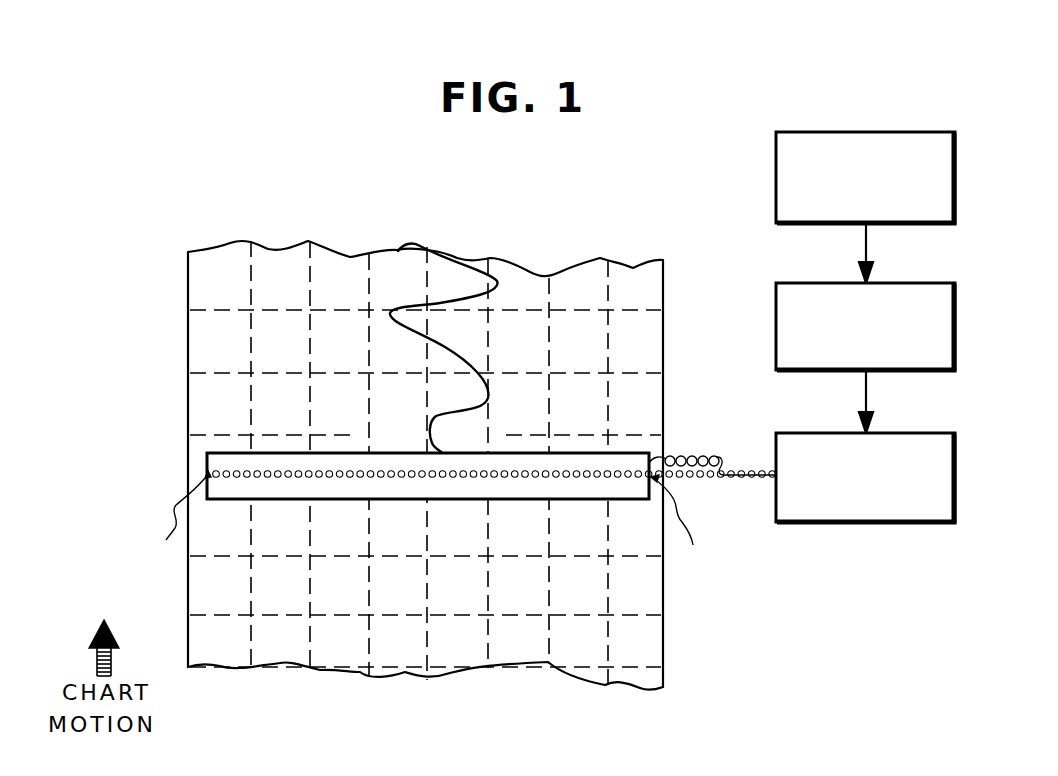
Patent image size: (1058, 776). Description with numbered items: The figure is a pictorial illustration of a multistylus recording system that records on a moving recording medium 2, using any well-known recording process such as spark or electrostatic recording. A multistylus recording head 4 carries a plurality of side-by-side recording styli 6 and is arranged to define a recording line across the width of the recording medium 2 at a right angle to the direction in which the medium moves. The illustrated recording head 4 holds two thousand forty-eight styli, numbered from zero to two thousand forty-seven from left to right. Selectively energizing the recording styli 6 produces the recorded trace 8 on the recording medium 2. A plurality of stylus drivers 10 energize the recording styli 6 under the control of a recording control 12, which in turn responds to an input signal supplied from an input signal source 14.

The recording medium 2 is at (664, 384).
The multistylus recording head 4 is at (627, 453).
The recording styli 6 is at (250, 472).
The recorded trace 8 is at (421, 252).
The stylus drivers 10 is at (896, 432).
The recording control 12 is at (896, 282).
The input signal source 14 is at (896, 131).